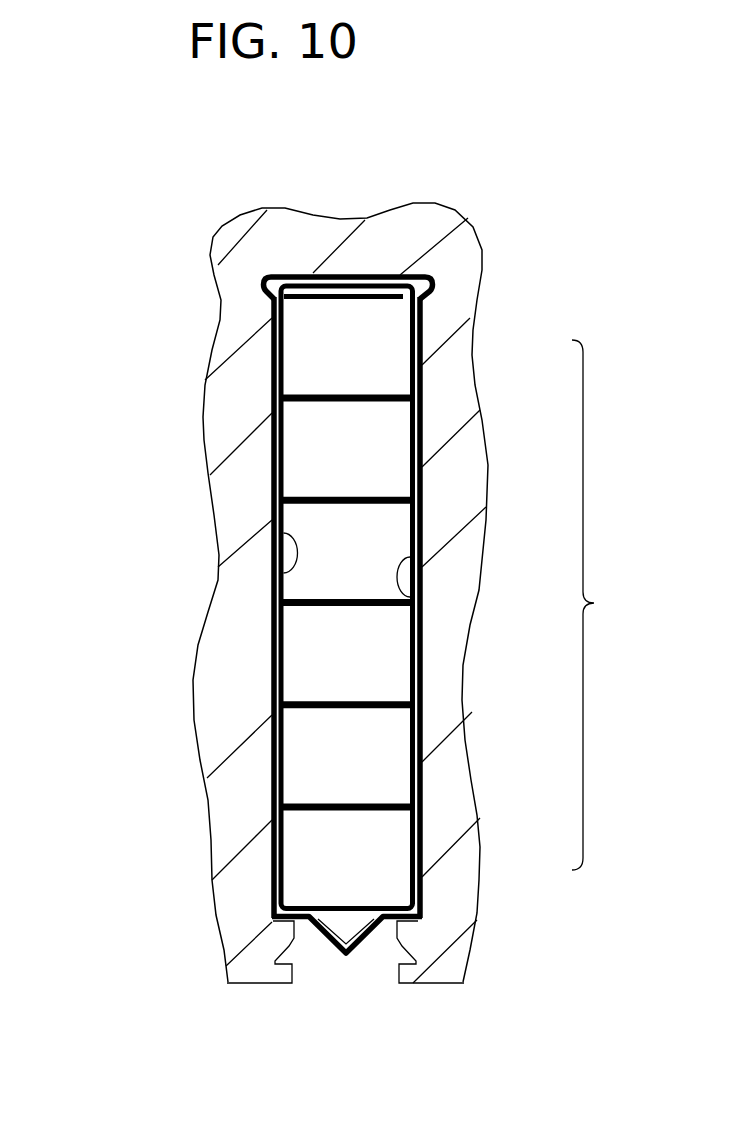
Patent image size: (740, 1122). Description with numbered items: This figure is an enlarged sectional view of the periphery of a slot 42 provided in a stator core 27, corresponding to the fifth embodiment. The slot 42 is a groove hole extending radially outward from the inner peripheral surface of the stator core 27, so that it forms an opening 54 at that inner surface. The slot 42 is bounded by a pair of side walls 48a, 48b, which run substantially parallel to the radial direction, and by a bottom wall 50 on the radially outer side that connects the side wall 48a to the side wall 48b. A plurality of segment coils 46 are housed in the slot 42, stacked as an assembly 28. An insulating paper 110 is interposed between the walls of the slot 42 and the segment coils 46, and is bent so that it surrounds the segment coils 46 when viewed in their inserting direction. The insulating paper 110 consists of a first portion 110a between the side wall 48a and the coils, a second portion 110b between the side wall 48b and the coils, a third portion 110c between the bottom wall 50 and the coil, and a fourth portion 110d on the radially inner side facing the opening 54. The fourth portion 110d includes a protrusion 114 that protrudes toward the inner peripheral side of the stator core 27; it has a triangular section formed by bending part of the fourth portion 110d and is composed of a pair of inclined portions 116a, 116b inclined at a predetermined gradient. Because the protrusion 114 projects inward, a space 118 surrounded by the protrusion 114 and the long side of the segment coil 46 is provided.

The stator core 27 is at (250, 366).
The stacked assembly 28 is at (601, 605).
The slot 42 is at (252, 617).
The segment coil 46 is at (380, 351).
The side wall 48a is at (288, 540).
The side wall 48b is at (405, 582).
The bottom wall 50 is at (399, 298).
The opening 54 is at (378, 988).
The insulating paper 110 is at (325, 586).
The first portion 110a is at (268, 750).
The second portion 110b is at (424, 690).
The third portion 110c is at (290, 276).
The fourth portion 110d is at (293, 908).
The protrusion 114 is at (340, 972).
The inclined portion 116a is at (327, 932).
The inclined portion 116b is at (364, 932).
The space 118 is at (333, 899).